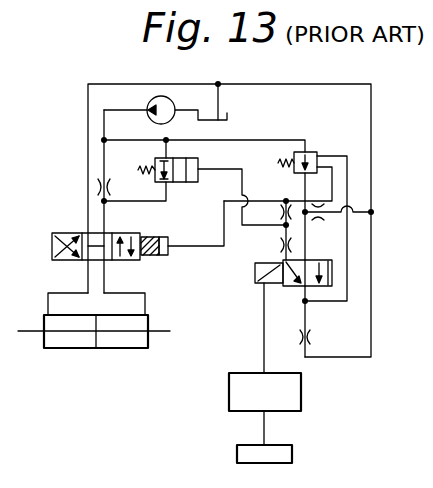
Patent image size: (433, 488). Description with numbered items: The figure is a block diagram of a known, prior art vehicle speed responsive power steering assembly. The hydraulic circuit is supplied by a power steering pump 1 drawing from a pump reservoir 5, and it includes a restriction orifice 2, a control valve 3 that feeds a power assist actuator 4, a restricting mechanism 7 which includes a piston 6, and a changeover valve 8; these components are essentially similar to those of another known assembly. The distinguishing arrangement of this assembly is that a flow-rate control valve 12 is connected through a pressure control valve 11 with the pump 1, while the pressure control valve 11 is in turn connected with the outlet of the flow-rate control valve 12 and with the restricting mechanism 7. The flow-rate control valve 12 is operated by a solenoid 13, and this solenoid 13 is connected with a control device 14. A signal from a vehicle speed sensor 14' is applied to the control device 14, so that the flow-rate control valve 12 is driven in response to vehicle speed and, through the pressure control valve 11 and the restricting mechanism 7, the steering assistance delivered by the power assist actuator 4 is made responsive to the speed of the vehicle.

The power steering pump 1 is at (170, 121).
The restriction orifice 2 is at (110, 181).
The control valve 3 is at (72, 233).
The power assist actuator 4 is at (137, 349).
The pump reservoir 5 is at (229, 116).
The piston 6 is at (157, 237).
The restricting mechanism 7 is at (171, 243).
The changeover valve 8 is at (200, 180).
The pressure control valve 11 is at (314, 152).
The flow-rate control valve 12 is at (298, 287).
The solenoid 13 is at (269, 264).
The control device 14 is at (241, 392).
The vehicle speed sensor 14' is at (240, 453).